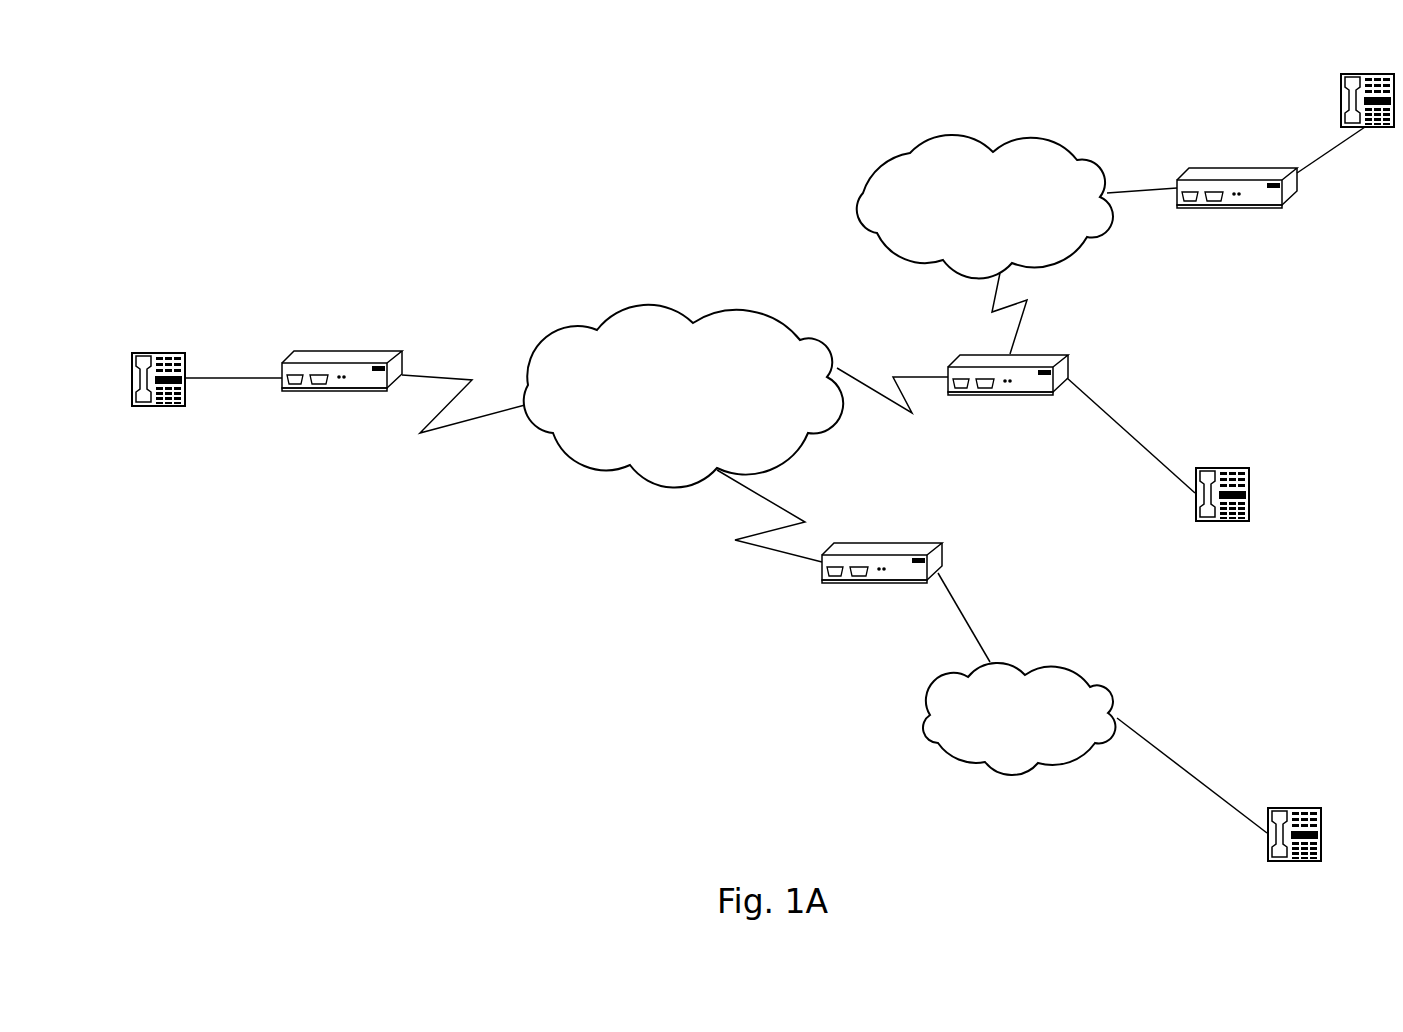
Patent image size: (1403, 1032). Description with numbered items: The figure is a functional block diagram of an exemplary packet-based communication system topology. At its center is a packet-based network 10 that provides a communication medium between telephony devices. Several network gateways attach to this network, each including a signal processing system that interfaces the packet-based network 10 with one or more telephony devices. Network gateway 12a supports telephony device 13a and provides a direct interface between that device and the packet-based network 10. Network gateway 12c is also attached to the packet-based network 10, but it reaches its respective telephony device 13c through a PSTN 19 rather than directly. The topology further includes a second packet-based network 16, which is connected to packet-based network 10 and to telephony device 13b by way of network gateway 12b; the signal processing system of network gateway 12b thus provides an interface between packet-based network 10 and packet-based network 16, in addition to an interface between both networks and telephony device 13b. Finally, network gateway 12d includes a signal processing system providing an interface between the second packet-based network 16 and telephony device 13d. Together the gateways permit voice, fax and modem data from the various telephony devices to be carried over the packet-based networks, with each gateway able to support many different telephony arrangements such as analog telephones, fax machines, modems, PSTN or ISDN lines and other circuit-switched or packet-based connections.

The packet-based network 10 is at (575, 330).
The network gateway 12a is at (325, 350).
The network gateway 12b is at (958, 362).
The network gateway 12c is at (863, 542).
The network gateway 12d is at (1187, 167).
The telephony device 13a is at (140, 350).
The telephony device 13b is at (1225, 465).
The telephony device 13c is at (1295, 807).
The telephony device 13d is at (1338, 100).
The second packet-based network 16 is at (863, 175).
The PSTN 19 is at (922, 725).